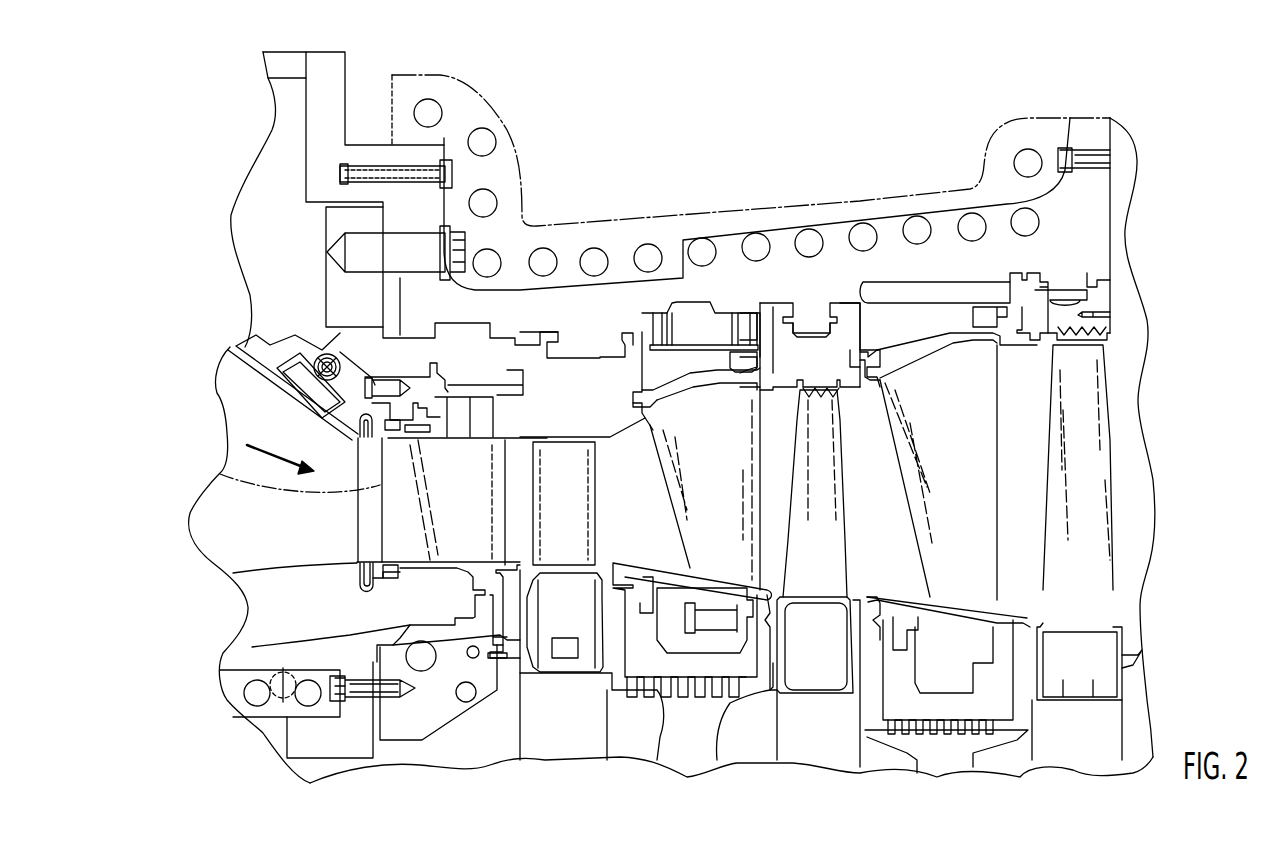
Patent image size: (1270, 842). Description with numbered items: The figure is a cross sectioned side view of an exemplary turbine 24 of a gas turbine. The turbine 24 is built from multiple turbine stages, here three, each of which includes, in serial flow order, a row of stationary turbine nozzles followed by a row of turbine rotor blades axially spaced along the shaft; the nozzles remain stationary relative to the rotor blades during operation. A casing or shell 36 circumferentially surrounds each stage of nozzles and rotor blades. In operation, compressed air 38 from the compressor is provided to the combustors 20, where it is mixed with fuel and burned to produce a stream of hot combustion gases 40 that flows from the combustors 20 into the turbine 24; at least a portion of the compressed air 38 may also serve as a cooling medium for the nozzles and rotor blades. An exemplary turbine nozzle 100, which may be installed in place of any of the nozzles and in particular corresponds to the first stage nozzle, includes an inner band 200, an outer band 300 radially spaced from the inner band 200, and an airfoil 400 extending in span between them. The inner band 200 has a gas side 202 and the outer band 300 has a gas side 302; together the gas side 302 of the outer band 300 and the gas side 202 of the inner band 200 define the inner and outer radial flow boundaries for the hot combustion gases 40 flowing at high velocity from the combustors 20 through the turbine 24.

The combustors 20 is at (252, 350).
The turbine 24 is at (597, 153).
The casing or shell 36 is at (783, 252).
The compressed air 38 is at (448, 438).
The hot combustion gases 40 is at (262, 462).
The turbine nozzle 100 is at (449, 514).
The inner band 200 is at (462, 580).
The gas side 202 is at (470, 548).
The outer band 300 is at (525, 427).
The gas side 302 is at (448, 440).
The airfoil 400 is at (455, 509).